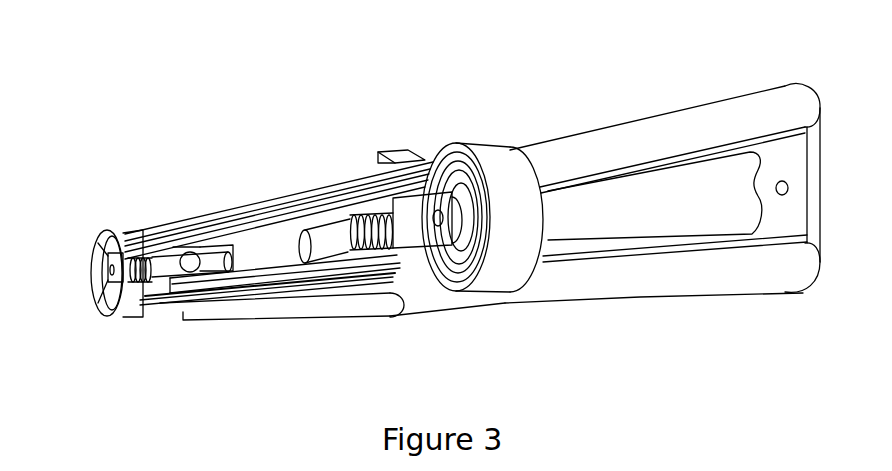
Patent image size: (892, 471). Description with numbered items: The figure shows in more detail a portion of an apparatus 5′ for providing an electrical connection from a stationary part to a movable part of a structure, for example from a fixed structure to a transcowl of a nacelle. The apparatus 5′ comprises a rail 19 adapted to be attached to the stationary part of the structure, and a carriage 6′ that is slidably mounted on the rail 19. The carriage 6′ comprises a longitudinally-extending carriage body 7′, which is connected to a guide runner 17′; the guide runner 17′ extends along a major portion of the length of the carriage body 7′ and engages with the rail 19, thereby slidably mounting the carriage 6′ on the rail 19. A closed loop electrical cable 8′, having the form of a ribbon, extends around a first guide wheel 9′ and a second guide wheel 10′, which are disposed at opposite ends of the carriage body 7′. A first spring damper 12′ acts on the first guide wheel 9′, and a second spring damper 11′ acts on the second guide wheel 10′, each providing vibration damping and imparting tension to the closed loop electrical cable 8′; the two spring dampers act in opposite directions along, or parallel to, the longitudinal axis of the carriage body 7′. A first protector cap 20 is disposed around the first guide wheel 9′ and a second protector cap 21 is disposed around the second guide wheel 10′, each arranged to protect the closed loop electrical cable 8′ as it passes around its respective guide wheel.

The apparatus 5′ is at (426, 140).
The carriage 6′ is at (278, 269).
The carriage body 7′ is at (257, 224).
The closed loop electrical cable 8′ is at (167, 312).
The first guide wheel 9′ is at (457, 258).
The second guide wheel 10′ is at (108, 315).
The second spring damper 11′ is at (160, 257).
The first spring damper 12′ is at (338, 234).
The guide runner 17′ is at (348, 307).
The rail 19 is at (710, 117).
The first protector cap 20 is at (498, 162).
The second protector cap 21 is at (92, 273).